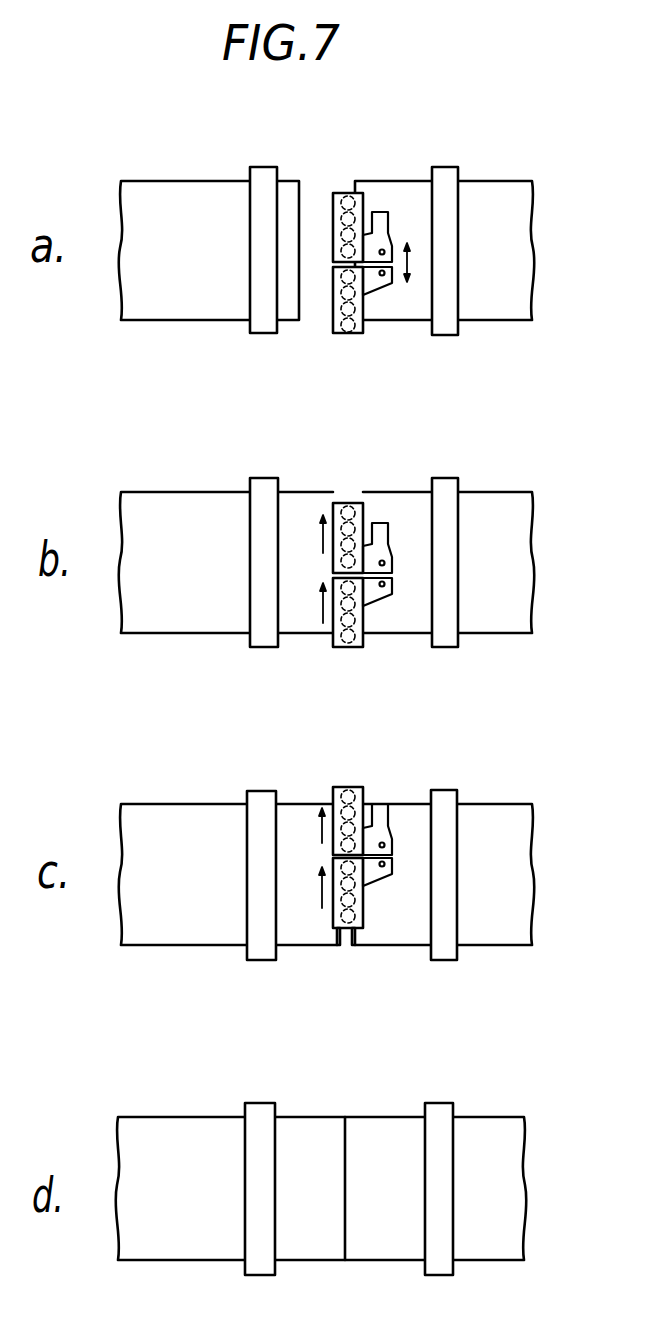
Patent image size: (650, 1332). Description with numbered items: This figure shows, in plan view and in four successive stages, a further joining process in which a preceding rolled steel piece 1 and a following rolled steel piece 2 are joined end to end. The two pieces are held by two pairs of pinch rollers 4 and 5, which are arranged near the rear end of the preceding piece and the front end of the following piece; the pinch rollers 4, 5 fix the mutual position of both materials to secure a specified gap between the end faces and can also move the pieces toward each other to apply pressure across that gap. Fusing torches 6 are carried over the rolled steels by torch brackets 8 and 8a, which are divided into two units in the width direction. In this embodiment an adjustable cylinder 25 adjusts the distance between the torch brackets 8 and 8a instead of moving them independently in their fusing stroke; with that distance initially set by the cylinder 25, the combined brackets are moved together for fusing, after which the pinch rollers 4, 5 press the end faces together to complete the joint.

The preceding rolled steel piece 1 is at (518, 198).
The following rolled steel piece 2 is at (131, 190).
The pinch roller 4 is at (266, 178).
The pinch roller 5 is at (446, 180).
The fusing torch 6 is at (335, 333).
The torch bracket 8 is at (343, 193).
The torch bracket 8a is at (363, 314).
The adjustable cylinder 25 is at (378, 212).